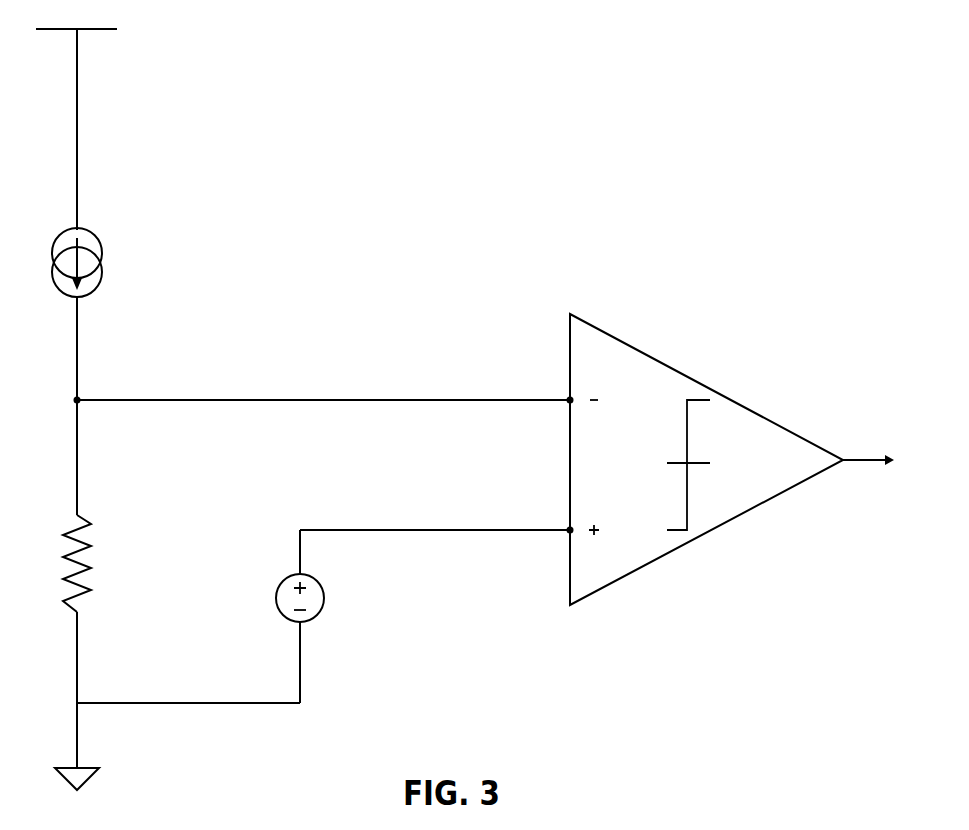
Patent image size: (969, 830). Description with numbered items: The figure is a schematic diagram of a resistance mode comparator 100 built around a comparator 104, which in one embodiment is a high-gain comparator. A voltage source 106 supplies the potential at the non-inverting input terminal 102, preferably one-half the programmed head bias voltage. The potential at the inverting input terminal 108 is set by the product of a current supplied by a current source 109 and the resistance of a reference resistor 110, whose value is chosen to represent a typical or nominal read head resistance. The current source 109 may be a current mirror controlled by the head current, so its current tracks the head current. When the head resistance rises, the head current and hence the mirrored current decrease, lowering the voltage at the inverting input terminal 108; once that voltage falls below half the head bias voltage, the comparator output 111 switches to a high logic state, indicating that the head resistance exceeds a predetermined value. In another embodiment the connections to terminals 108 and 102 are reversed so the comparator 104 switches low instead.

The resistance mode comparator 100 is at (388, 241).
The current source 109 is at (97, 240).
The reference resistor 110 is at (100, 531).
The inverting input terminal 108 is at (568, 399).
The non-inverting input terminal 102 is at (568, 529).
The voltage source 106 is at (276, 596).
The comparator 104 is at (678, 371).
The comparator output 111 is at (862, 458).